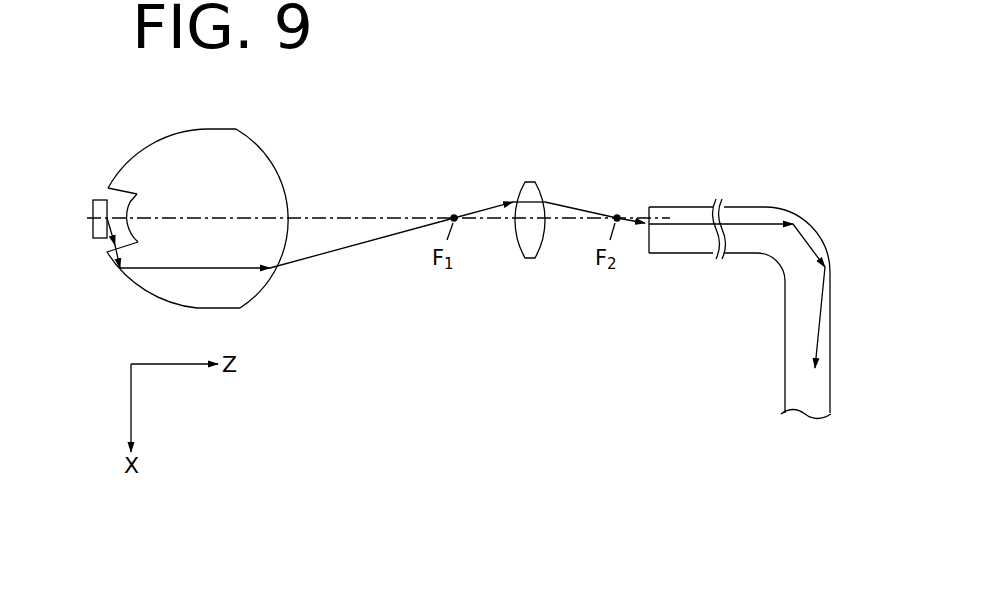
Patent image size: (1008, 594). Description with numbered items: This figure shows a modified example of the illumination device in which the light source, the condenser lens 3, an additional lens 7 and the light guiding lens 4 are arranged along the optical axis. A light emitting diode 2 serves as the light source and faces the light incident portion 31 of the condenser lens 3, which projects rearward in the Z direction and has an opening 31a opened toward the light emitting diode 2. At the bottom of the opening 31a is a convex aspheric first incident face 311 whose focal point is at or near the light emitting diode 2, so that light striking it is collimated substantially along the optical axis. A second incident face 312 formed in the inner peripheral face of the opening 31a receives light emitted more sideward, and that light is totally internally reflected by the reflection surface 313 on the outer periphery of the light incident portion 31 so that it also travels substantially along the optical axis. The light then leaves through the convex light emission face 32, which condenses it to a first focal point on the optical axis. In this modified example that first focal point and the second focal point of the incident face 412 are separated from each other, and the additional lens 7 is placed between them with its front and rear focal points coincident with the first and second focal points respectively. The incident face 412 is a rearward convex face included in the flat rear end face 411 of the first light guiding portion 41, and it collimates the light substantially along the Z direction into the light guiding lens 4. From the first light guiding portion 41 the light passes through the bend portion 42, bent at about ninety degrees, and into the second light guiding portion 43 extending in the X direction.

The light emitting diode 2 is at (93, 213).
The condenser lens 3 is at (210, 128).
The light incident portion 31 is at (108, 121).
The opening 31a is at (120, 199).
The first incident face 311 is at (129, 194).
The second incident face 312 is at (118, 199).
The reflection surface 313 is at (133, 280).
The light emission face 32 is at (250, 148).
The additional lens 7 is at (540, 188).
The light guiding lens 4 is at (787, 192).
The first light guiding portion 41 is at (690, 207).
The rear end face 411 is at (649, 253).
The incident face 412 is at (649, 208).
The bend portion 42 is at (808, 230).
The second light guiding portion 43 is at (783, 343).